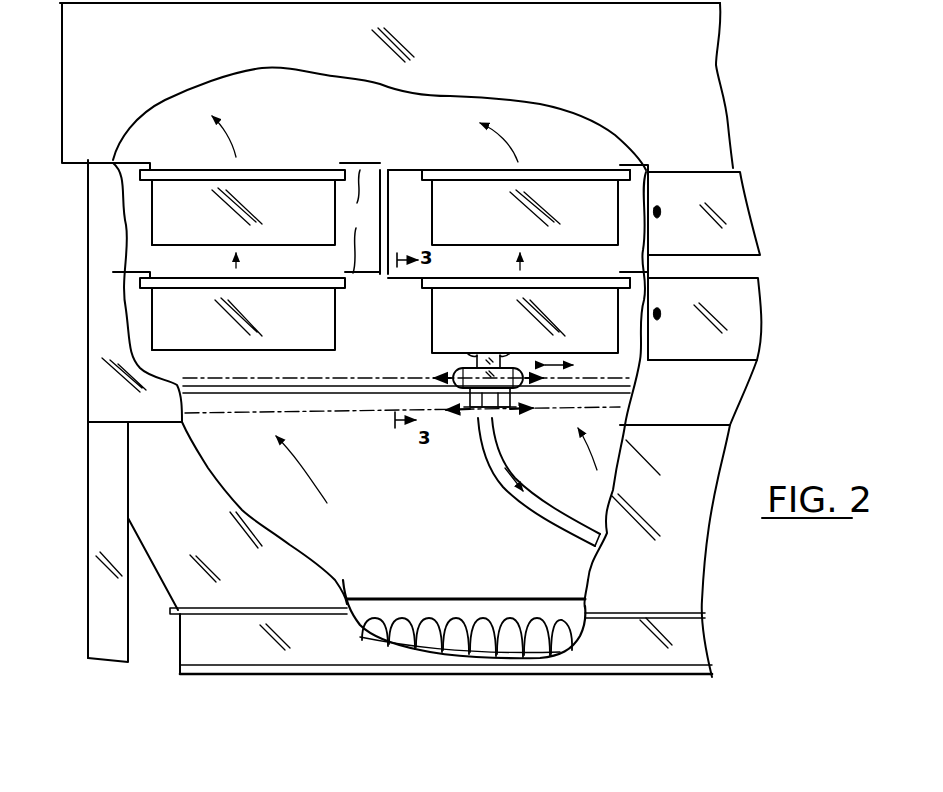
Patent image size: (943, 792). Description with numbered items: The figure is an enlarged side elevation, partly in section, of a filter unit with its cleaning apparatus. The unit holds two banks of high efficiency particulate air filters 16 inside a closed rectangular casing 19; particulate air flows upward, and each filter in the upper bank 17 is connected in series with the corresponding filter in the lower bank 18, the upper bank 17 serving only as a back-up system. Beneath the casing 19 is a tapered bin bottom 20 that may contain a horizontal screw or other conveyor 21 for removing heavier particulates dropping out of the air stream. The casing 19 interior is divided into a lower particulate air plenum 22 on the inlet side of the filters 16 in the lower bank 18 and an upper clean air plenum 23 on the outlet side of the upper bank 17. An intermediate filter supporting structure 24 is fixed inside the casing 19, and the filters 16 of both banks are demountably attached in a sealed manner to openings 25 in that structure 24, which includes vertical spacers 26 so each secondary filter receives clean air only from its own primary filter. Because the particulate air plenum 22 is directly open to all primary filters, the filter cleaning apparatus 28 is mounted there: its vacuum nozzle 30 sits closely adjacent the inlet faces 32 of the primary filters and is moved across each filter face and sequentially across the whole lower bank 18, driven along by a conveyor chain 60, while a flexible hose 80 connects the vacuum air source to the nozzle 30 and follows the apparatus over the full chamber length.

The high efficiency particulate air filters 16 is at (292, 211).
The upper bank 17 is at (150, 212).
The lower bank 18 is at (150, 318).
The casing 19 is at (113, 376).
The tapered bin bottom 20 is at (185, 535).
The conveyor 21 is at (333, 666).
The particulate air plenum 22 is at (380, 482).
The clean air plenum 23 is at (332, 112).
The filter supporting structure 24 is at (365, 222).
The openings 25 is at (337, 170).
The vertical spacers 26 is at (390, 244).
The filter cleaning apparatus 28 is at (467, 420).
The vacuum nozzle 30 is at (490, 356).
The inlet faces 32 is at (440, 355).
The conveyor chain 60 is at (353, 383).
The flexible hose 80 is at (554, 513).